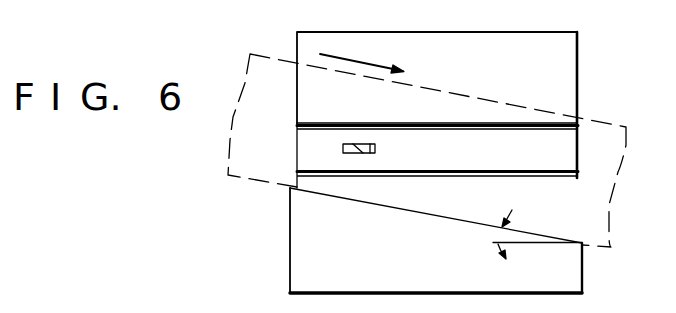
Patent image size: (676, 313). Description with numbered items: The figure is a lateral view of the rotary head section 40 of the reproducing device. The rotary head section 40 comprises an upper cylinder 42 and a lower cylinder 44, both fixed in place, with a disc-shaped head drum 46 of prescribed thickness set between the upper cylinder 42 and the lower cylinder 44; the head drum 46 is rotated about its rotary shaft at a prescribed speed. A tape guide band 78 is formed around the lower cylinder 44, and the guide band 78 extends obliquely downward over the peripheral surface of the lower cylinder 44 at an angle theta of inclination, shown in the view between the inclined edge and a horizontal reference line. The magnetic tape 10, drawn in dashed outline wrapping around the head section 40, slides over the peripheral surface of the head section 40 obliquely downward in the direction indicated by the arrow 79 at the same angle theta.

The magnetic tape 10 is at (608, 120).
The rotary head section 40 is at (288, 257).
The upper cylinder 42 is at (578, 60).
The lower cylinder 44 is at (583, 275).
The head drum 46 is at (578, 152).
The tape guide band 78 is at (297, 187).
The arrow 79 is at (348, 58).